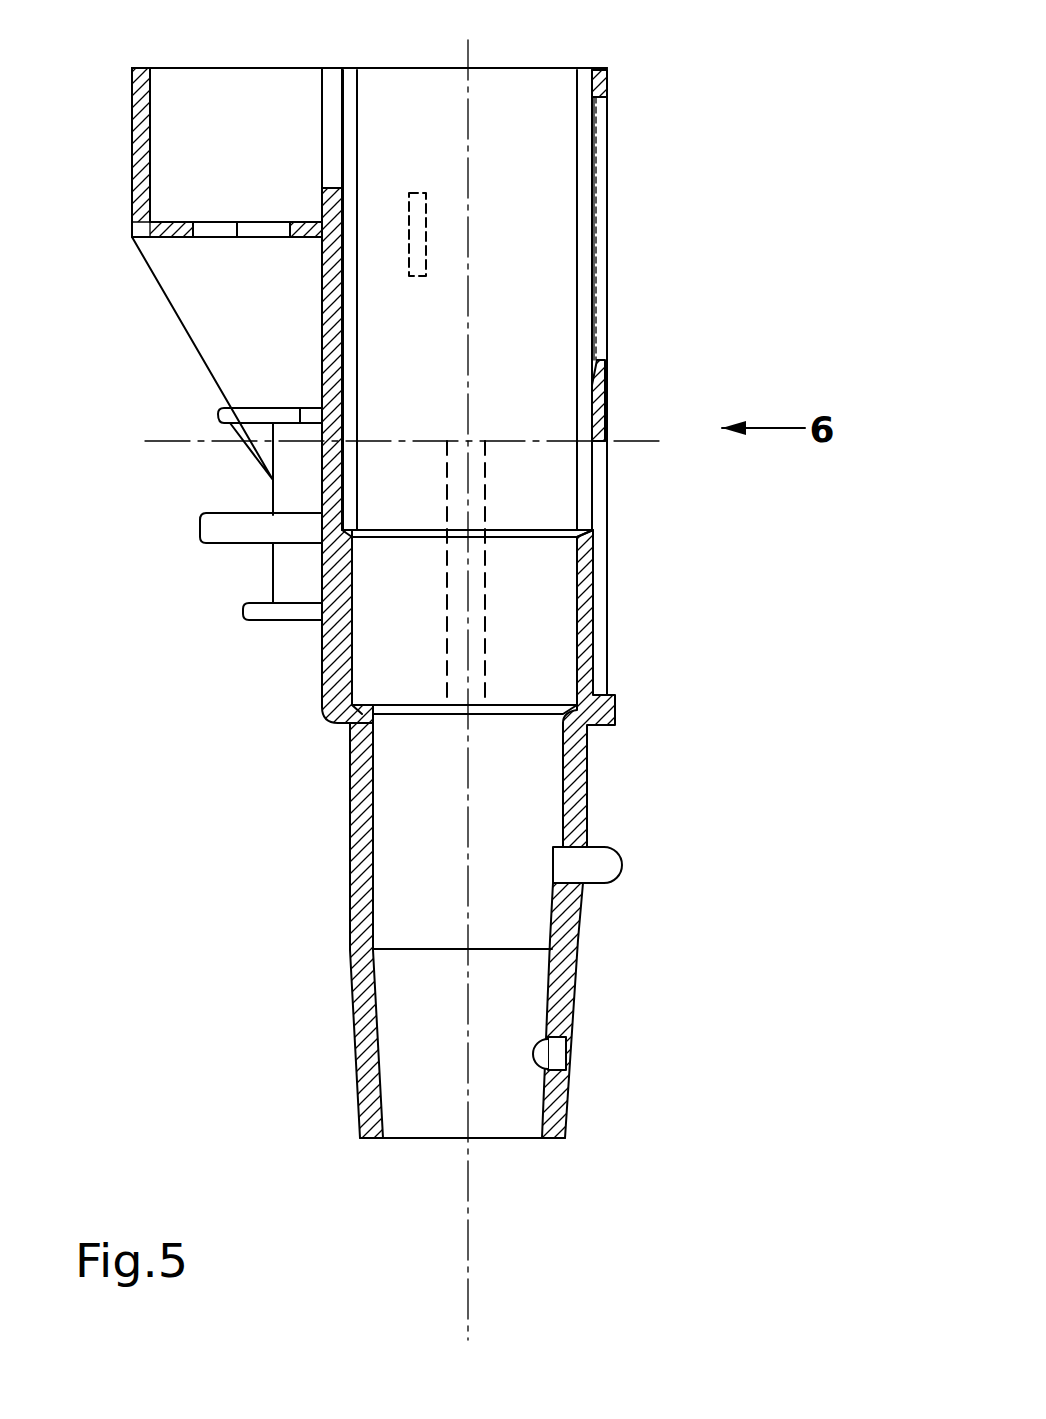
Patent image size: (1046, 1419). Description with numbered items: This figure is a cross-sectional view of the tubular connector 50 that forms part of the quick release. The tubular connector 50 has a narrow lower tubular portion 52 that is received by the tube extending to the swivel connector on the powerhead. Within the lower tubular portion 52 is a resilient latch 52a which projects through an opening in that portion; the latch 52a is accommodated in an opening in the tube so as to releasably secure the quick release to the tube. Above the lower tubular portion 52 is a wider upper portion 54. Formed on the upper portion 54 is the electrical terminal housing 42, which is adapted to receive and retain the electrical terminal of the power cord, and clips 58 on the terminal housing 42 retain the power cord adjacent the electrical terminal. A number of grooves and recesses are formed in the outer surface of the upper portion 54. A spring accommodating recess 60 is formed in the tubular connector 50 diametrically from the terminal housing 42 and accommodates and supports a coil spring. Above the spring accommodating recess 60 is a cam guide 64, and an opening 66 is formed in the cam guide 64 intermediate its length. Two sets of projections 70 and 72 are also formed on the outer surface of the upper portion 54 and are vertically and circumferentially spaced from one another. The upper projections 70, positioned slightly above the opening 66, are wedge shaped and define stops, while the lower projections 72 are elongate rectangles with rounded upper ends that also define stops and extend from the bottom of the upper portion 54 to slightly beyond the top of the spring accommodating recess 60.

The electrical terminal housing 42 is at (127, 217).
The tubular connector 50 is at (653, 72).
The lower tubular portion 52 is at (335, 842).
The resilient latch 52a is at (620, 872).
The upper portion 54 is at (665, 483).
The clips 58 is at (230, 415).
The spring accommodating recess 60 is at (597, 655).
The cam guide 64 is at (602, 140).
The opening 66 is at (598, 200).
The upper projections 70 is at (412, 240).
The lower projections 72 is at (473, 556).